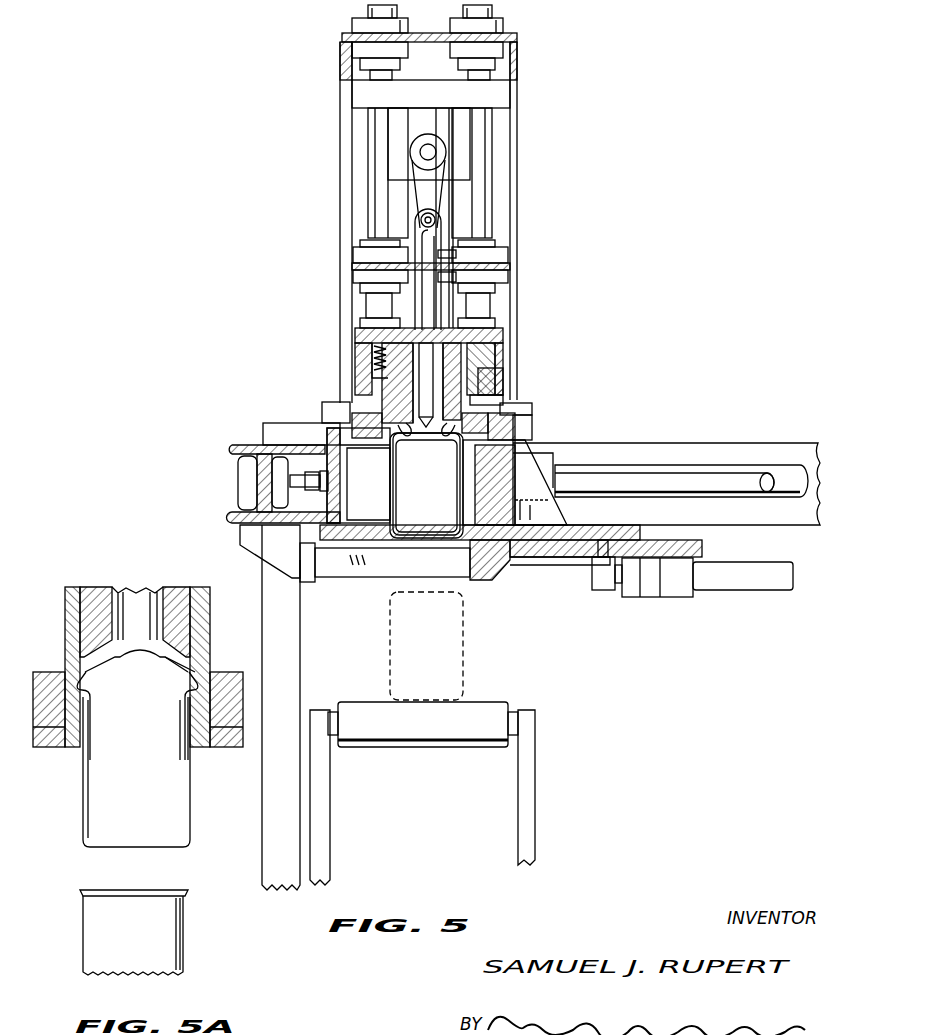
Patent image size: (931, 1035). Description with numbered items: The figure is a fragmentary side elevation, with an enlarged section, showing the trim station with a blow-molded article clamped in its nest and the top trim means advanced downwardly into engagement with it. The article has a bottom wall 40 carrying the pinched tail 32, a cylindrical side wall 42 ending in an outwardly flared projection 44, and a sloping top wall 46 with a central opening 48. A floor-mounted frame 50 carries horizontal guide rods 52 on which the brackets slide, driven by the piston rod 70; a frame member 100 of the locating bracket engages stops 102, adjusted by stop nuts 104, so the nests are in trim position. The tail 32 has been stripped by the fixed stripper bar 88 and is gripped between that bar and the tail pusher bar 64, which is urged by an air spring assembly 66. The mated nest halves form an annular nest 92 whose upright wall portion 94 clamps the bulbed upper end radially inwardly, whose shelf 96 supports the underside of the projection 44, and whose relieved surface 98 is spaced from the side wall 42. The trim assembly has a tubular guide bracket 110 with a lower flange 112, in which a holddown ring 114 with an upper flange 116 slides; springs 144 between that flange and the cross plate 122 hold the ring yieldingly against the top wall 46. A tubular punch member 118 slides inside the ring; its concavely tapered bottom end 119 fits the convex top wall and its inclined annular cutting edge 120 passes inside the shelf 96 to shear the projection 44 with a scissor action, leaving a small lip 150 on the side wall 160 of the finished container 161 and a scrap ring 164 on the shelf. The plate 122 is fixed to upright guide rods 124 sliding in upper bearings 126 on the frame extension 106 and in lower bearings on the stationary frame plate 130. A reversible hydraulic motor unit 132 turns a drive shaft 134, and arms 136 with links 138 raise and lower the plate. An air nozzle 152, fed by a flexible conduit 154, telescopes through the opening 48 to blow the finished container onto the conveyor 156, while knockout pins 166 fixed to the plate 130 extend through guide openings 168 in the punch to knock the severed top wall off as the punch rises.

In FIG. 5, the tail 32 is at (510, 560).
In FIG. 5, the bottom wall 40 is at (405, 543).
In FIG. 5A, the cylindrical side wall 42 is at (190, 785).
In FIG. 5A, the side wall projection 44 is at (92, 692).
In FIG. 5, the top wall 46 is at (448, 438).
In FIG. 5, the central opening 48 is at (405, 438).
In FIG. 5, the frame 50 is at (262, 583).
In FIG. 5, the guide rods 52 is at (790, 462).
In FIG. 5, the tail pusher bar 64 is at (525, 548).
In FIG. 5, the air spring assembly 66 is at (705, 598).
In FIG. 5, the piston rod 70 is at (625, 470).
In FIG. 5, the stripper bar 88 is at (490, 575).
In FIG. 5A, the nest 92 is at (50, 678).
In FIG. 5A, the annular upright wall portion 94 is at (195, 675).
In FIG. 5A, the annular shelf 96 is at (176, 700).
In FIG. 5A, the relieved surface 98 is at (182, 720).
In FIG. 5, the frame member 100 is at (345, 488).
In FIG. 5, the stops 102 is at (318, 425).
In FIG. 5, the stop nuts 104 is at (300, 490).
In FIG. 5, the frame extension 106 is at (525, 97).
In FIG. 5, the tubular guide bracket 110 is at (498, 378).
In FIG. 5, the lower flange 112 is at (490, 400).
In FIG. 5, the container holddown ring 114 is at (490, 345).
In FIG. 5A, the container holddown ring 114 is at (72, 628).
In FIG. 5, the flange 116 is at (500, 356).
In FIG. 5, the tubular punch member 118 is at (462, 346).
In FIG. 5, the bottom end 119 is at (390, 447).
In FIG. 5, the annular cutting edge 120 is at (442, 445).
In FIG. 5A, the annular cutting edge 120 is at (172, 672).
In FIG. 5, the cross plate 122 is at (358, 332).
In FIG. 5, the upright guide rods 124 is at (370, 120).
In FIG. 5, the upper bearings 126 is at (362, 25).
In FIG. 5, the stationary frame plate 130 is at (355, 266).
In FIG. 5, the hydraulic motor unit 132 is at (432, 127).
In FIG. 5, the drive shaft 134 is at (436, 152).
In FIG. 5, the arms 136 is at (433, 190).
In FIG. 5, the links 138 is at (408, 243).
In FIG. 5, the springs 144 is at (372, 348).
In FIG. 5A, the outwardly flared lip 150 is at (186, 893).
In FIG. 5, the air nozzle 152 is at (430, 440).
In FIG. 5, the flexible air supply conduit 154 is at (432, 232).
In FIG. 5, the conveyor 156 is at (500, 708).
In FIG. 5A, the side wall 160 is at (186, 958).
In FIG. 5, the finished container 161 is at (390, 505).
In FIG. 5A, the finished container 161 is at (186, 928).
In FIG. 5, the scrap ring 164 is at (515, 428).
In FIG. 5, the knockout pins 166 is at (455, 275).
In FIG. 5, the guide openings 168 is at (532, 409).